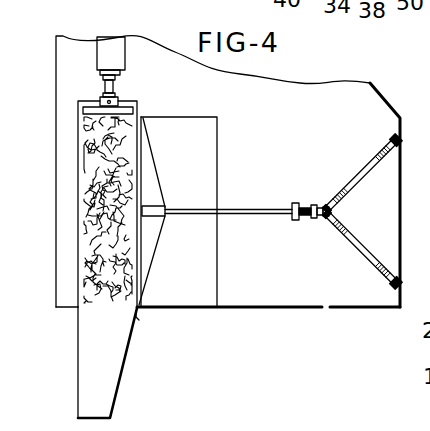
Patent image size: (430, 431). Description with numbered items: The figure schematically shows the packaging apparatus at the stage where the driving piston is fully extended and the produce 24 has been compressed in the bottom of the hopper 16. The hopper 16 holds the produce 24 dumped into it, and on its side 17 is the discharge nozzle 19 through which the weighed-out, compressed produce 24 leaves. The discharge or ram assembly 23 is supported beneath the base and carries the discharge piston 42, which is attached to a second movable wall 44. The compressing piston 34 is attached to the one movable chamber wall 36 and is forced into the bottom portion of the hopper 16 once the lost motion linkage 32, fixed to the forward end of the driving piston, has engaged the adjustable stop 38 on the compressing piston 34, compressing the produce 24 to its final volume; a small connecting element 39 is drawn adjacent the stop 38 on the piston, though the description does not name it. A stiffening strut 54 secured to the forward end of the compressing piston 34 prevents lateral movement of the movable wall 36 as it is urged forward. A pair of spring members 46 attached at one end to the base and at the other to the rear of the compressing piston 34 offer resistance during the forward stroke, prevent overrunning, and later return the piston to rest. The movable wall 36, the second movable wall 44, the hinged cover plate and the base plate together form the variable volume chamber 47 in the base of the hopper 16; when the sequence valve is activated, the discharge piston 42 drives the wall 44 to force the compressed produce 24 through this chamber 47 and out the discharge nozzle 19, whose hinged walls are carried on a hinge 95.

The hopper 16 is at (403, 212).
The side of the hopper 17 is at (287, 309).
The discharge nozzle 19 is at (127, 353).
The discharge or ram assembly 23 is at (93, 57).
The discharge piston 42 is at (107, 70).
The second movable wall 44 is at (128, 131).
The produce 24 is at (141, 117).
The movable chamber wall 36 is at (137, 247).
The variable volume chamber 47 is at (126, 277).
The hinge 95 is at (138, 316).
The stiffening strut 54 is at (152, 182).
The compressing piston 34 is at (246, 216).
The lost motion linkage 32 is at (293, 203).
The adjustable stop 38 is at (298, 221).
The pivot hub 39 is at (314, 204).
The spring members 46 is at (357, 186).